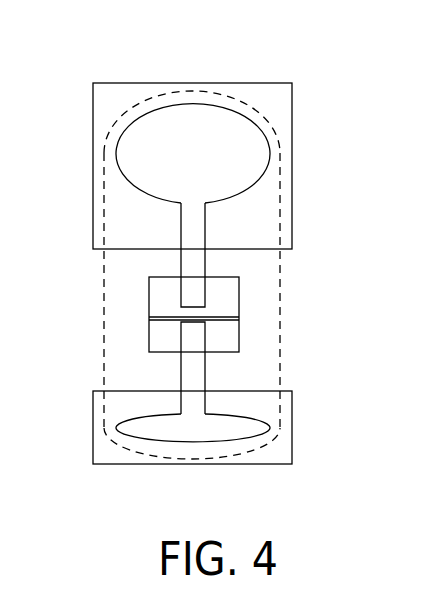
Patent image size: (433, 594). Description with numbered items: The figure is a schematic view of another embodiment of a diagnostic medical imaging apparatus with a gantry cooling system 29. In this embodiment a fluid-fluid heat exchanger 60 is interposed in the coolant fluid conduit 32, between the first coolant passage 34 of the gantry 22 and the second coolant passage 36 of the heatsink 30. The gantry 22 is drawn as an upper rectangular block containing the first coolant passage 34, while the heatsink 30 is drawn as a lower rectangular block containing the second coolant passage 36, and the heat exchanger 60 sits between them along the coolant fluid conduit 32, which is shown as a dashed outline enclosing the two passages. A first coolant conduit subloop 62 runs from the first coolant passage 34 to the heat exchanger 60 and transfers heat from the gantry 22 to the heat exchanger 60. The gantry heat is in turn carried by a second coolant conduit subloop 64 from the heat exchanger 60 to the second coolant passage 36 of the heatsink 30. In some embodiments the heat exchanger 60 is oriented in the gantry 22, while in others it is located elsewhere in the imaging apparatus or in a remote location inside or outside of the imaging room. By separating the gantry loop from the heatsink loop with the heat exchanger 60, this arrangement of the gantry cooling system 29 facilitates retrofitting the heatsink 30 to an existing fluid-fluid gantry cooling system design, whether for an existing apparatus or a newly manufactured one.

The gantry 22 is at (296, 172).
The gantry cooling system 29 is at (91, 258).
The heatsink 30 is at (294, 437).
The coolant fluid conduit 32 is at (91, 214).
The first coolant passage 34 is at (218, 106).
The second coolant passage 36 is at (143, 436).
The fluid-fluid heat exchanger 60 is at (240, 298).
The first coolant conduit subloop 62 is at (183, 272).
The second coolant conduit subloop 64 is at (181, 372).